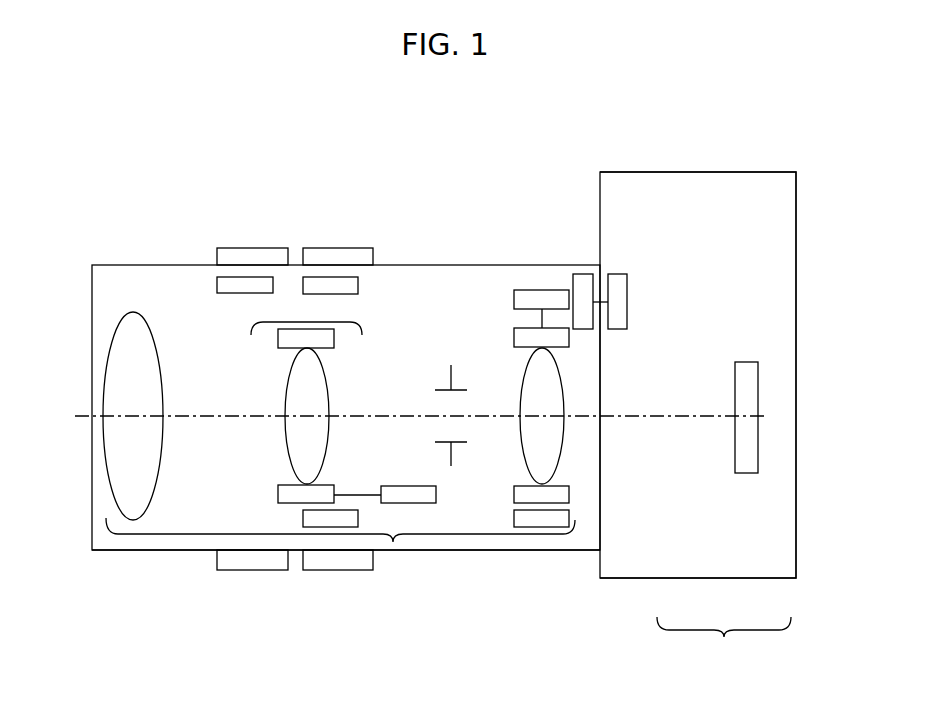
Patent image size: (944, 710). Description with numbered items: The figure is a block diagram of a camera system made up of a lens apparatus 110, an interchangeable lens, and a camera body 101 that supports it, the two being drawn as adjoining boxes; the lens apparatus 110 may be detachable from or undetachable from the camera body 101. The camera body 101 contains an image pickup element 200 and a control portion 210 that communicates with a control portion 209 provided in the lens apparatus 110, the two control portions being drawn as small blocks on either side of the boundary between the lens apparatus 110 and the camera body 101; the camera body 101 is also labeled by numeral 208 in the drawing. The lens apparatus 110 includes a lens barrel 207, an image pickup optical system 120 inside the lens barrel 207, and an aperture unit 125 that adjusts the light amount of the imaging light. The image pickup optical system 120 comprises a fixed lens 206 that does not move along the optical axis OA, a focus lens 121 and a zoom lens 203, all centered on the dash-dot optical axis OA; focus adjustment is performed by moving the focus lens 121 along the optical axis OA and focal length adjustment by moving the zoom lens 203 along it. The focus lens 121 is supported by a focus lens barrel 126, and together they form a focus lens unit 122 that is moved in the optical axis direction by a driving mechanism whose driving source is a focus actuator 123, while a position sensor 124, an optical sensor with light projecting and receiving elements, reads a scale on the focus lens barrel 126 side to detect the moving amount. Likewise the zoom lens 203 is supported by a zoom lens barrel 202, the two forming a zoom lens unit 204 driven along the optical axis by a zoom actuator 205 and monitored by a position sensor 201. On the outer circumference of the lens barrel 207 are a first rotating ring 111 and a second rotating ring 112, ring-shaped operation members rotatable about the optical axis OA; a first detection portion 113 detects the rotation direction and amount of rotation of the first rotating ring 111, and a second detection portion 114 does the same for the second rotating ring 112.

The lens apparatus 110 is at (61, 140).
The camera body 101 is at (593, 140).
The camera body housing 208 is at (797, 193).
The image pickup element 200 is at (758, 378).
The position sensor 201 is at (514, 518).
The zoom lens barrel 202 is at (569, 495).
The zoom lens 203 is at (557, 438).
The zoom lens unit 204 is at (724, 641).
The zoom actuator 205 is at (532, 290).
The fixed lens 206 is at (137, 312).
The lens barrel 207 is at (487, 553).
The control portion 209 is at (588, 274).
The control portion 210 is at (620, 274).
The first rotating ring 111 is at (340, 248).
The second rotating ring 112 is at (258, 248).
The first detection portion 113 is at (358, 284).
The second detection portion 114 is at (217, 285).
The image pickup optical system 120 is at (393, 542).
The focus lens 121 is at (284, 432).
The focus lens unit 122 is at (305, 322).
The focus actuator 123 is at (406, 486).
The position sensor 124 is at (358, 518).
The aperture unit 125 is at (455, 377).
The focus lens barrel 126 is at (328, 486).
The optical axis OA is at (193, 418).